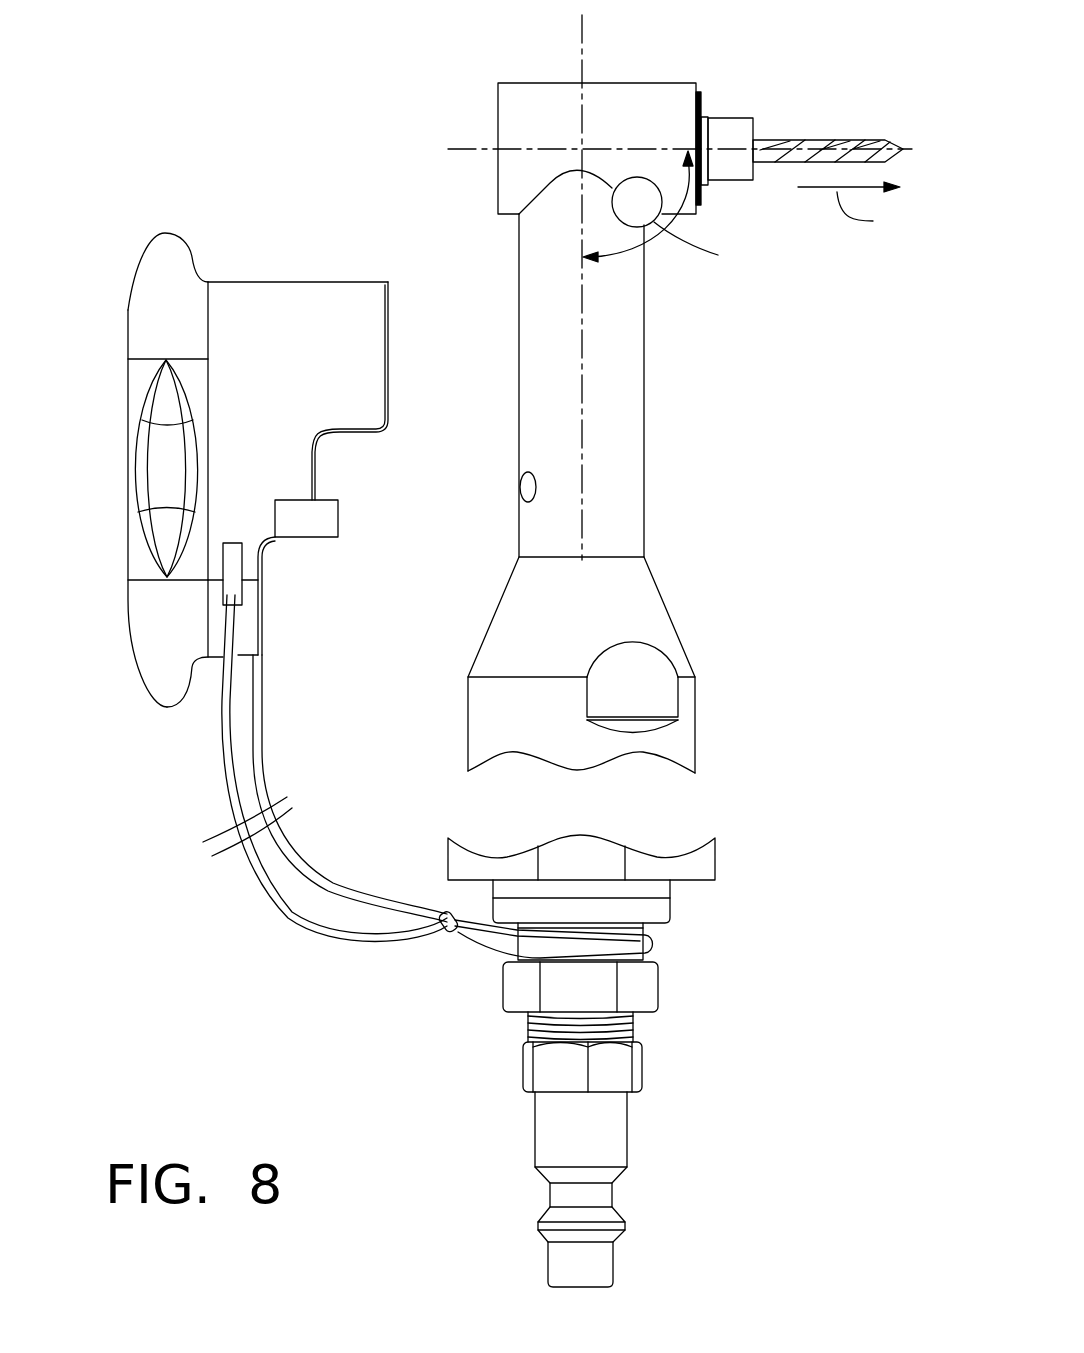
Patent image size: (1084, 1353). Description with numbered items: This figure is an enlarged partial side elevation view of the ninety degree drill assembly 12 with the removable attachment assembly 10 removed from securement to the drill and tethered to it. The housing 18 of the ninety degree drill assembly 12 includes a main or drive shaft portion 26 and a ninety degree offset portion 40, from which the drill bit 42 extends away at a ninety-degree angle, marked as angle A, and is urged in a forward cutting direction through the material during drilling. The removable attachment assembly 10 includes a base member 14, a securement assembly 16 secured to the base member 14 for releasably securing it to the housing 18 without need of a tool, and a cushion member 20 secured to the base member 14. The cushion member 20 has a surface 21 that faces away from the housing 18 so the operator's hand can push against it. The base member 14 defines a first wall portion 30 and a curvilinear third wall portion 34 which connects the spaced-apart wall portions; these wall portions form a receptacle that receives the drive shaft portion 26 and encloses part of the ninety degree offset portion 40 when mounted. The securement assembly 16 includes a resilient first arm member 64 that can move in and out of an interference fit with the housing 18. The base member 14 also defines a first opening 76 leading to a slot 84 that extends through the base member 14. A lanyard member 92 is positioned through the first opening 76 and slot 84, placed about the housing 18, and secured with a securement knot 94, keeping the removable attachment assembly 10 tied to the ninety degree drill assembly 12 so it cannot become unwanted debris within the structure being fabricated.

The removable attachment assembly 10 is at (253, 232).
The ninety degree drill assembly 12 is at (673, 595).
The base member 14 is at (337, 327).
The securement assembly 16 is at (308, 545).
The housing 18 is at (667, 388).
The cushion member 20 is at (162, 292).
The surface 21 is at (130, 308).
The drive shaft portion 26 is at (583, 287).
The first wall portion 30 is at (318, 345).
The third wall portion 34 is at (298, 288).
The ninety degree offset portion 40 is at (618, 103).
The drill bit 42 is at (802, 137).
The first arm member 64 is at (312, 522).
The first opening 76 is at (233, 541).
The slot 84 is at (224, 596).
The lanyard member 92 is at (290, 918).
The securement knot 94 is at (443, 940).